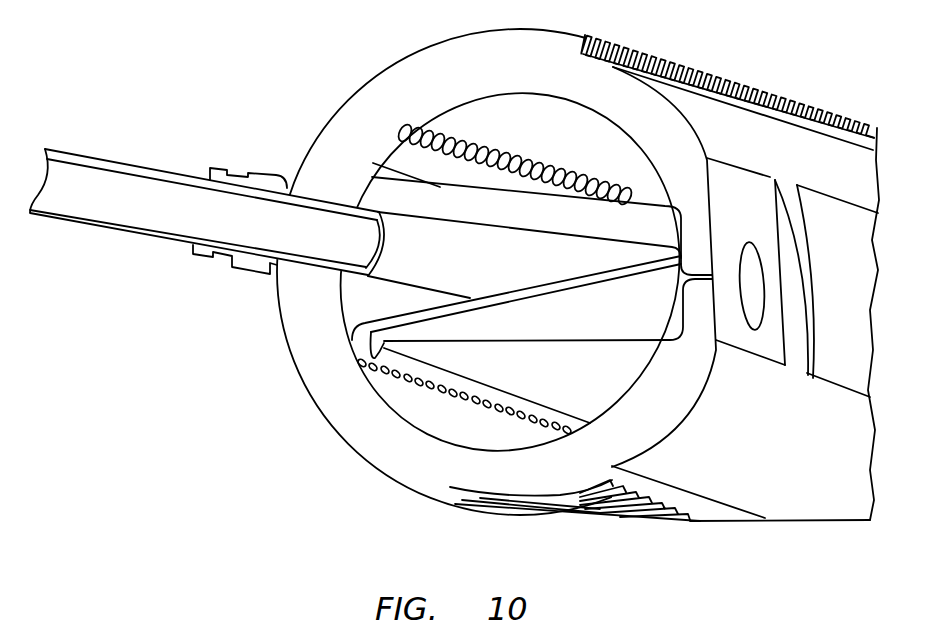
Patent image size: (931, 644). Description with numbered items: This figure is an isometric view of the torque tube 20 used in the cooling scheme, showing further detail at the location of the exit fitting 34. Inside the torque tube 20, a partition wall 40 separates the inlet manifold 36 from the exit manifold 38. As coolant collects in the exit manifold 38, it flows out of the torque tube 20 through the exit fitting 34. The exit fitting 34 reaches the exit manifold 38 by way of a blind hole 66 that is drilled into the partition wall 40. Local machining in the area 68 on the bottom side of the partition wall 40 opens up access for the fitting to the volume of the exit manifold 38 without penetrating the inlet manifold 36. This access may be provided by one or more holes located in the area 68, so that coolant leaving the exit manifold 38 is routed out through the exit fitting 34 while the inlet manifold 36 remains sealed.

The torque tube 20 is at (722, 122).
The exit fitting 34 is at (143, 166).
The inlet manifold 36 is at (473, 140).
The exit manifold 38 is at (505, 395).
The partition wall 40 is at (712, 268).
The blind hole 66 is at (455, 262).
The area 68 is at (556, 308).